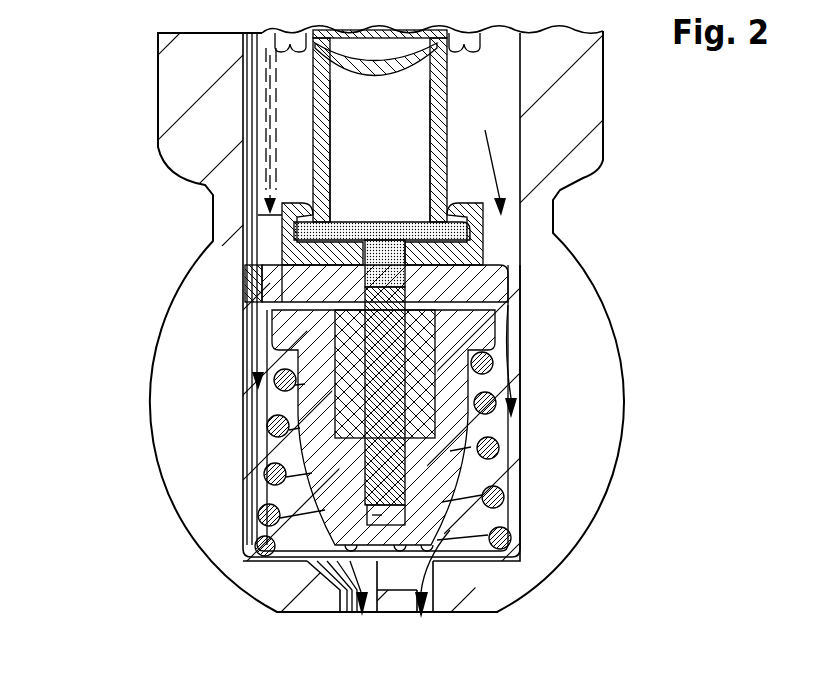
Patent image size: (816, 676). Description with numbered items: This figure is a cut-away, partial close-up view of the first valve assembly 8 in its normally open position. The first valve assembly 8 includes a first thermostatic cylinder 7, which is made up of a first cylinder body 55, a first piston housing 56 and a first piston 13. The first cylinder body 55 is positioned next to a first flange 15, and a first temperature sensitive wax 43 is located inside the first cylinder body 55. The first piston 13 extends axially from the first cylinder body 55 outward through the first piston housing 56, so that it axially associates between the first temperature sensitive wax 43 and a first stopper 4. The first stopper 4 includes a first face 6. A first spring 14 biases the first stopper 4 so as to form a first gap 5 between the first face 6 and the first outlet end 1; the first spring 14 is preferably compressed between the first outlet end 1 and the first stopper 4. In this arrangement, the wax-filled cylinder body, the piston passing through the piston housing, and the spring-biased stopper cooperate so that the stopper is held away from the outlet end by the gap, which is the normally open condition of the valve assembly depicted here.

The first valve assembly 8 is at (67, 50).
The first cylinder body 55 is at (313, 106).
The first temperature sensitive wax 43 is at (407, 133).
The first thermostatic cylinder 7 is at (294, 228).
The first flange 15 is at (262, 270).
The first piston housing 56 is at (250, 300).
The first spring 14 is at (275, 430).
The first stopper 4 is at (470, 430).
The first piston 13 is at (405, 448).
The first gap 5 is at (262, 542).
The first outlet end 1 is at (307, 561).
The first face 6 is at (417, 557).